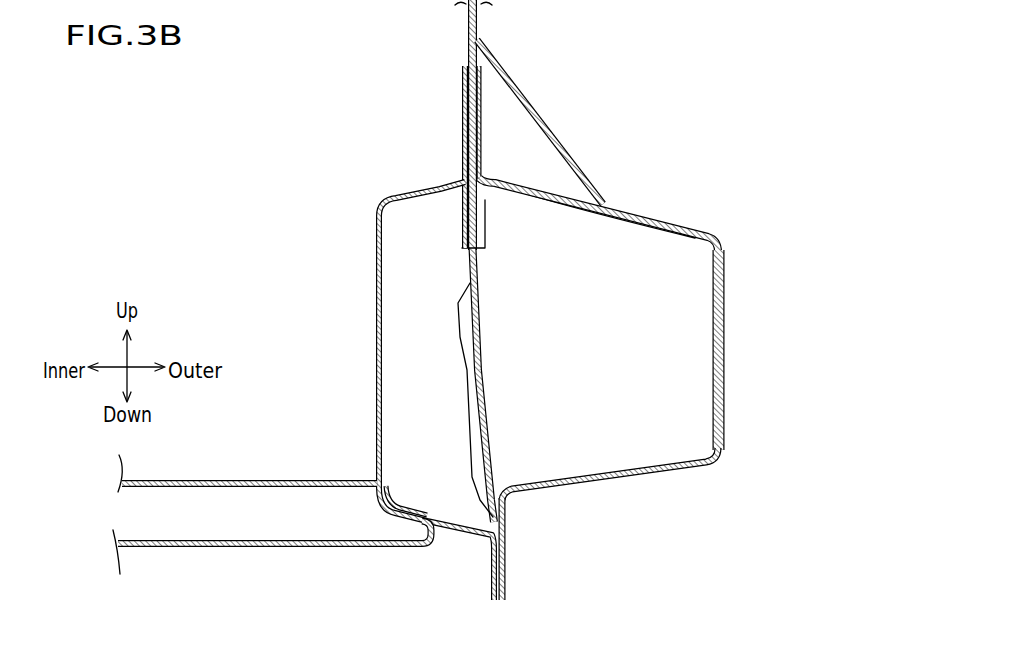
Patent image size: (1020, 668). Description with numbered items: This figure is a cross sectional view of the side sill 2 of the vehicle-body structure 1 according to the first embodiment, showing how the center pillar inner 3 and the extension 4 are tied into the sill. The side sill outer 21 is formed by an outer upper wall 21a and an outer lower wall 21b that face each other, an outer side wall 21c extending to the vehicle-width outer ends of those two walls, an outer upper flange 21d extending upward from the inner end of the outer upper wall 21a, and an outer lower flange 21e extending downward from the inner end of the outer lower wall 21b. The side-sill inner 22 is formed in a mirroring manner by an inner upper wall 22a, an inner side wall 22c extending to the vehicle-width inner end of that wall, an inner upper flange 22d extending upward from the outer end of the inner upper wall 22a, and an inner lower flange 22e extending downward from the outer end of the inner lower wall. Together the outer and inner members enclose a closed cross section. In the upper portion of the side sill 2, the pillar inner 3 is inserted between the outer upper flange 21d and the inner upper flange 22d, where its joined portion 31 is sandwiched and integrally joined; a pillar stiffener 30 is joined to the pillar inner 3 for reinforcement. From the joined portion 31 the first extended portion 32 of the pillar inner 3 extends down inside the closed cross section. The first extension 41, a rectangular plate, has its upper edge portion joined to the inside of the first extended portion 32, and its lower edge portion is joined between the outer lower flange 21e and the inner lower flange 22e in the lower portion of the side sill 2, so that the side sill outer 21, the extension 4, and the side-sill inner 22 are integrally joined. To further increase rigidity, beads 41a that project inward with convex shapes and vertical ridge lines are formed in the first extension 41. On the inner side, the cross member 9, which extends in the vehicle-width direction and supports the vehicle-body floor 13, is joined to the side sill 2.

The vehicle-body structure 1 is at (206, 156).
The side sill 2 is at (520, 333).
The center pillar inner 3 is at (467, 40).
The extension 4 is at (523, 385).
The cross member 9 is at (280, 548).
The vehicle-body floor 13 is at (215, 480).
The side sill outer 21 is at (674, 333).
The outer upper wall 21a is at (548, 187).
The outer lower wall 21b is at (667, 470).
The outer side wall 21c is at (718, 393).
The outer upper flange 21d is at (481, 120).
The outer lower flange 21e is at (646, 549).
The side-sill inner 22 is at (332, 333).
The inner upper wall 22a is at (410, 194).
The inner side wall 22c is at (376, 318).
The inner upper flange 22d is at (462, 102).
The inner lower flange 22e is at (491, 582).
The pillar stiffener 30 is at (556, 137).
The joined portion 31 is at (478, 103).
The first extended portion 32 is at (487, 238).
The first extension 41 is at (477, 347).
The bead 41a is at (461, 366).